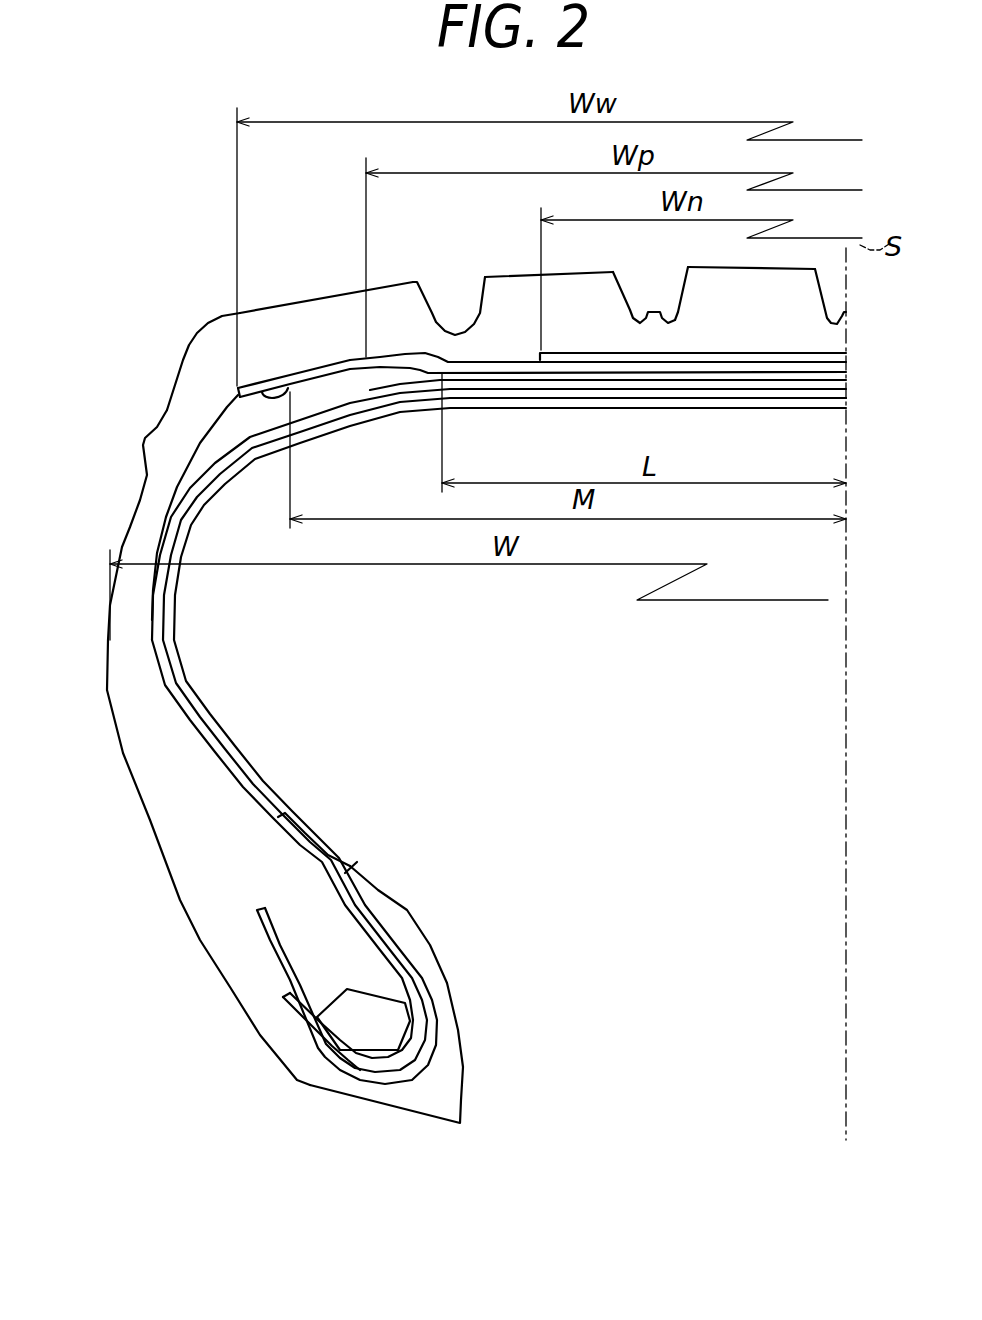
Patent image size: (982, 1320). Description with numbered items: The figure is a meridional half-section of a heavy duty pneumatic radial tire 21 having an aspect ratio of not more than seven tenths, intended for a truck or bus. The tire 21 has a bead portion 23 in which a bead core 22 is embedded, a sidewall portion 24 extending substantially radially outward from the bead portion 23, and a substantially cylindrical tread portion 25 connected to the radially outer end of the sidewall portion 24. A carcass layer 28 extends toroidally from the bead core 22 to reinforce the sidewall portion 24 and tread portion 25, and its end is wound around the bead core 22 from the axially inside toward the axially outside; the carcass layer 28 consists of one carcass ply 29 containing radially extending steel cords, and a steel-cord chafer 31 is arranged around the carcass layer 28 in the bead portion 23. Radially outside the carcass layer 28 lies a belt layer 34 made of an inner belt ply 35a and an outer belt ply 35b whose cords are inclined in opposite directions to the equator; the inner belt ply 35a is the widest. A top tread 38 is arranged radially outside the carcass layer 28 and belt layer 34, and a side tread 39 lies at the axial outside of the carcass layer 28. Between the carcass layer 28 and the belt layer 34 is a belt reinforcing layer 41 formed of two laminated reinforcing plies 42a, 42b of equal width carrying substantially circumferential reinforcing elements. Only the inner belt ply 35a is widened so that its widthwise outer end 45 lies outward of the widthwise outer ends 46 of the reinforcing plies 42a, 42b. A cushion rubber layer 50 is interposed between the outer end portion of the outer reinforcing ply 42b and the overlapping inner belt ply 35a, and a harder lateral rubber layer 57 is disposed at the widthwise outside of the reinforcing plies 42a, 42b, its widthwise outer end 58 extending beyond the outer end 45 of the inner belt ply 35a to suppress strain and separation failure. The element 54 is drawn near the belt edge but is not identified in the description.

The heavy duty pneumatic radial tire 21 is at (185, 325).
The bead core 22 is at (427, 1019).
The bead portion 23 is at (406, 993).
The sidewall portion 24 is at (504, 741).
The tread portion 25 is at (426, 262).
The carcass layer 28 is at (301, 799).
The carcass ply 29 is at (282, 849).
The chafer 31 is at (396, 894).
The belt layer 34 is at (693, 320).
The inner belt ply 35a is at (767, 312).
The outer belt ply 35b is at (650, 295).
The top tread 38 is at (458, 266).
The side tread 39 is at (172, 747).
The belt reinforcing layer 41 is at (648, 432).
The inner reinforcing ply 42a is at (648, 416).
The outer reinforcing ply 42b is at (608, 414).
The widthwise outer end of inner belt ply 45 is at (212, 381).
The widthwise outer end of reinforcing plies 46 is at (588, 416).
The cushion rubber layer 50 is at (543, 352).
The cushion rubber 54 is at (269, 359).
The lateral rubber layer 57 is at (301, 514).
The widthwise outer end of lateral rubber layer 58 is at (143, 507).